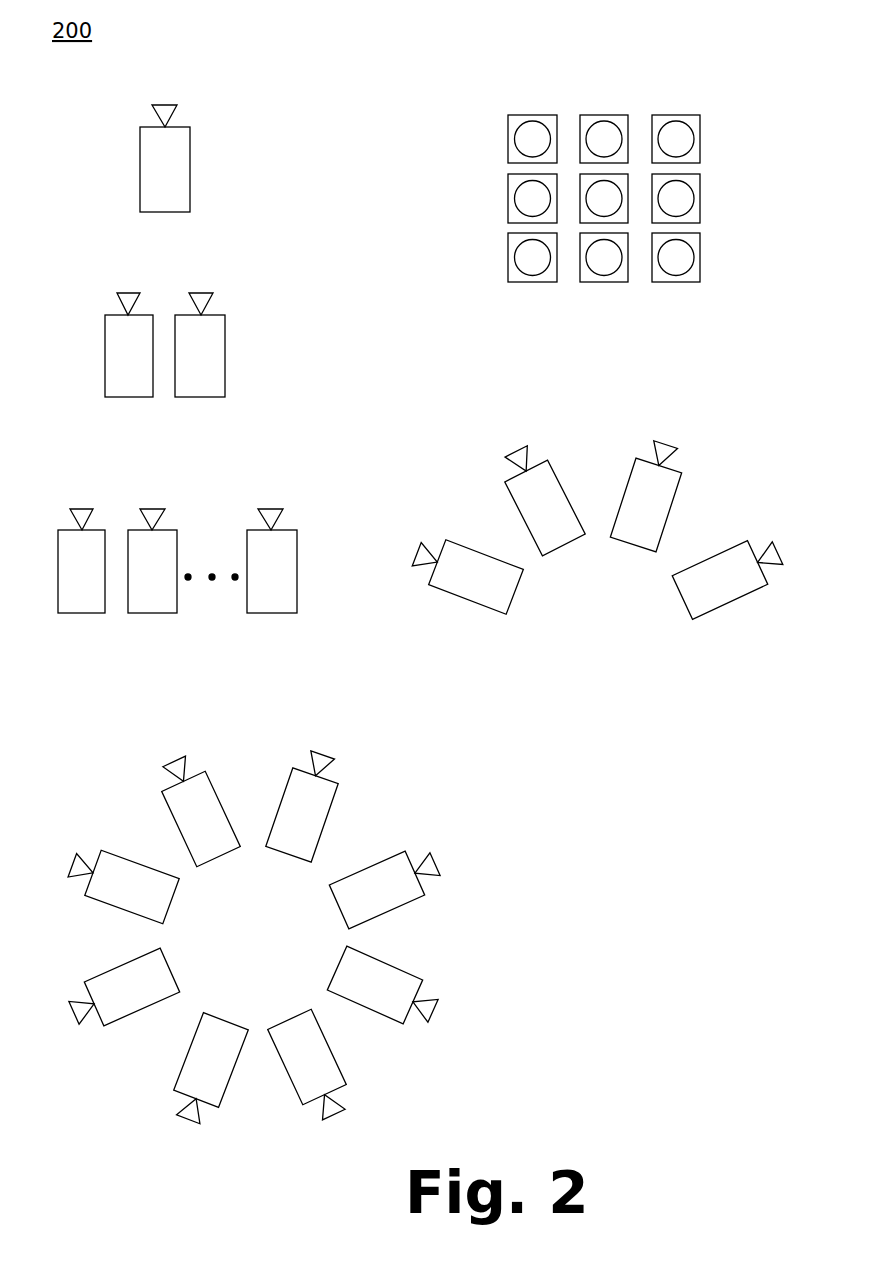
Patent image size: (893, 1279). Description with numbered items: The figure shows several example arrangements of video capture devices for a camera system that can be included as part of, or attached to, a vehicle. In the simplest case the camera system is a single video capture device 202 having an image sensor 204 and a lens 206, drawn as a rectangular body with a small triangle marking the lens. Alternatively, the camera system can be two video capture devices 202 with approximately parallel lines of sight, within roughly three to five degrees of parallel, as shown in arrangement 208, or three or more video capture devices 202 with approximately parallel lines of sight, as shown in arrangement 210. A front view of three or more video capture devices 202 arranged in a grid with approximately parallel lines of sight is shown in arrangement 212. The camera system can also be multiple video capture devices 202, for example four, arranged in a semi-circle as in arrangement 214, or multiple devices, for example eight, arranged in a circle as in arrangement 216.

The video capture device 202 is at (172, 126).
The image sensor 204 is at (140, 150).
The lens 206 is at (164, 104).
The arrangement 208 is at (243, 280).
The arrangement 210 is at (310, 467).
The arrangement 212 is at (718, 83).
The arrangement 214 is at (682, 421).
The arrangement 216 is at (349, 717).